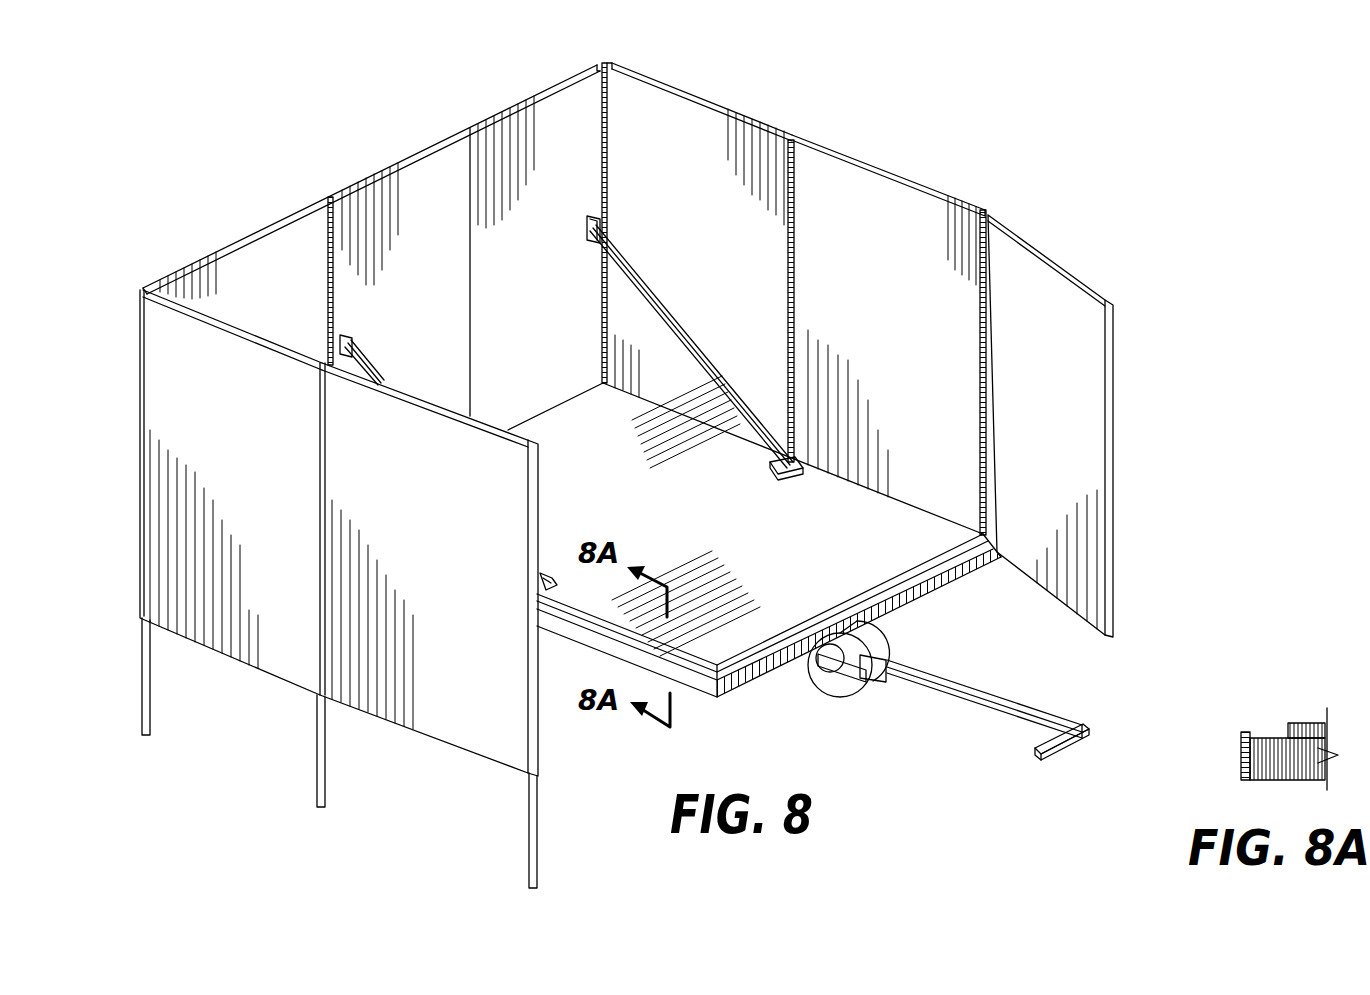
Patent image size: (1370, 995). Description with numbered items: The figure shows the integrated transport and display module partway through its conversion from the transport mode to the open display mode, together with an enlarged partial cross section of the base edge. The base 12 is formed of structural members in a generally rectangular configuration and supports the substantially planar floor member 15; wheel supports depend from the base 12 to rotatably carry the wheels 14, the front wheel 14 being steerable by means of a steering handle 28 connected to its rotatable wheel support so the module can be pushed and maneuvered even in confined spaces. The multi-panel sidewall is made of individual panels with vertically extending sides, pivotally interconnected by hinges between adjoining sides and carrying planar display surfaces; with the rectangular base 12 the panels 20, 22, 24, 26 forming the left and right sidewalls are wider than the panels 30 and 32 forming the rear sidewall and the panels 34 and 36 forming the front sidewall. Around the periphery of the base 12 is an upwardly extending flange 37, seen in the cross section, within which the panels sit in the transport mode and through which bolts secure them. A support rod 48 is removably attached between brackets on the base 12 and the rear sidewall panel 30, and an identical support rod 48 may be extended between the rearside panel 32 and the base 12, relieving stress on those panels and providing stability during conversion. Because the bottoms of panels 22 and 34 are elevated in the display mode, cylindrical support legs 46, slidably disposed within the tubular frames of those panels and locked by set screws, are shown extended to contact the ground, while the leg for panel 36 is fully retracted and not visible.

In FIG. 8, the base 12 is at (970, 570).
In FIG. 8, the wheel 14 is at (830, 688).
In FIG. 8, the floor member 15 is at (840, 566).
In FIG. 8, the panel 20 is at (268, 256).
In FIG. 8, the panel 22 is at (185, 507).
In FIG. 8, the panel 24 is at (670, 112).
In FIG. 8, the panel 26 is at (843, 177).
In FIG. 8, the steering handle 28 is at (967, 707).
In FIG. 8, the rear sidewall panel 30 is at (440, 175).
In FIG. 8, the rear sidewall panel 32 is at (572, 105).
In FIG. 8, the panel 34 is at (497, 712).
In FIG. 8, the panel 36 is at (1040, 287).
In FIG. 8A, the flange 37 is at (1240, 763).
In FIG. 8, the support leg 46 is at (142, 652).
In FIG. 8, the support rod 48 is at (667, 310).